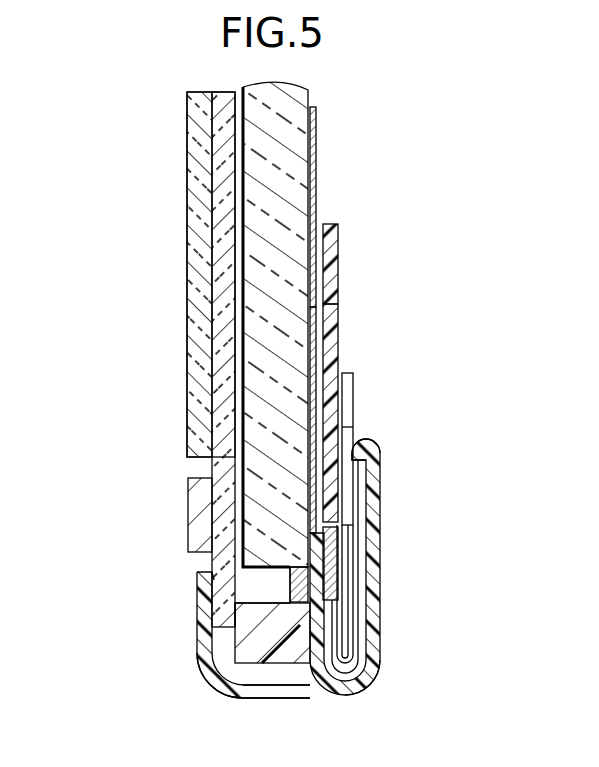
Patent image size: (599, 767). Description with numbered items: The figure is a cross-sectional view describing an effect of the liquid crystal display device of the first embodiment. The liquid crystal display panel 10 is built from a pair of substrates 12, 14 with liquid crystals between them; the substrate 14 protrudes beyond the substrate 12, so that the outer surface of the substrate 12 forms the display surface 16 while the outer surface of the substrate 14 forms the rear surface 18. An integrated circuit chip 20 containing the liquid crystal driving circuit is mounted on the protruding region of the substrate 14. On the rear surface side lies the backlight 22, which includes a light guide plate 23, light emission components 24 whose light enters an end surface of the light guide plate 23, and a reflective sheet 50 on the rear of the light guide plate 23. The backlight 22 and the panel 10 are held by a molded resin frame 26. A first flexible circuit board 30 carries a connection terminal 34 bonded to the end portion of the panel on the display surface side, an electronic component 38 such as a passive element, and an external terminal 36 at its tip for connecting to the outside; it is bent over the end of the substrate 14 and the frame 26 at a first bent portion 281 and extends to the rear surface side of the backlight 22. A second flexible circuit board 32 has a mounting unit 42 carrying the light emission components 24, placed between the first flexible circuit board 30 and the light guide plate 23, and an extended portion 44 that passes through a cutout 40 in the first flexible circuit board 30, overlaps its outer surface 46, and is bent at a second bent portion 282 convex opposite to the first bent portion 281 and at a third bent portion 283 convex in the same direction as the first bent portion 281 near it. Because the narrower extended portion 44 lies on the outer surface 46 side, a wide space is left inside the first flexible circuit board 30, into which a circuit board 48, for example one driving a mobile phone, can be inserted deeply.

The liquid crystal display panel 10 is at (177, 178).
The substrate 12 is at (200, 384).
The substrate 14 is at (226, 432).
The display surface 16 is at (190, 322).
The rear surface 18 is at (233, 272).
The integrated circuit chip 20 is at (188, 520).
The backlight 22 is at (457, 312).
The light guide plate 23 is at (338, 341).
The light emission component 24 is at (318, 372).
The frame 26 is at (262, 665).
The first flexible circuit board 30 is at (198, 655).
The second flexible circuit board 32 is at (352, 610).
The connection terminal 34 is at (214, 575).
The external terminal 36 is at (354, 415).
The electronic component 38 is at (376, 495).
The cutout 40 is at (283, 697).
The mounting unit 42 is at (300, 582).
The extended portion 44 is at (341, 692).
The outer surface 46 is at (340, 534).
The circuit board 48 is at (338, 244).
The reflective sheet 50 is at (316, 162).
The first bent portion 281 is at (208, 676).
The second bent portion 282 is at (375, 446).
The third bent portion 283 is at (372, 684).